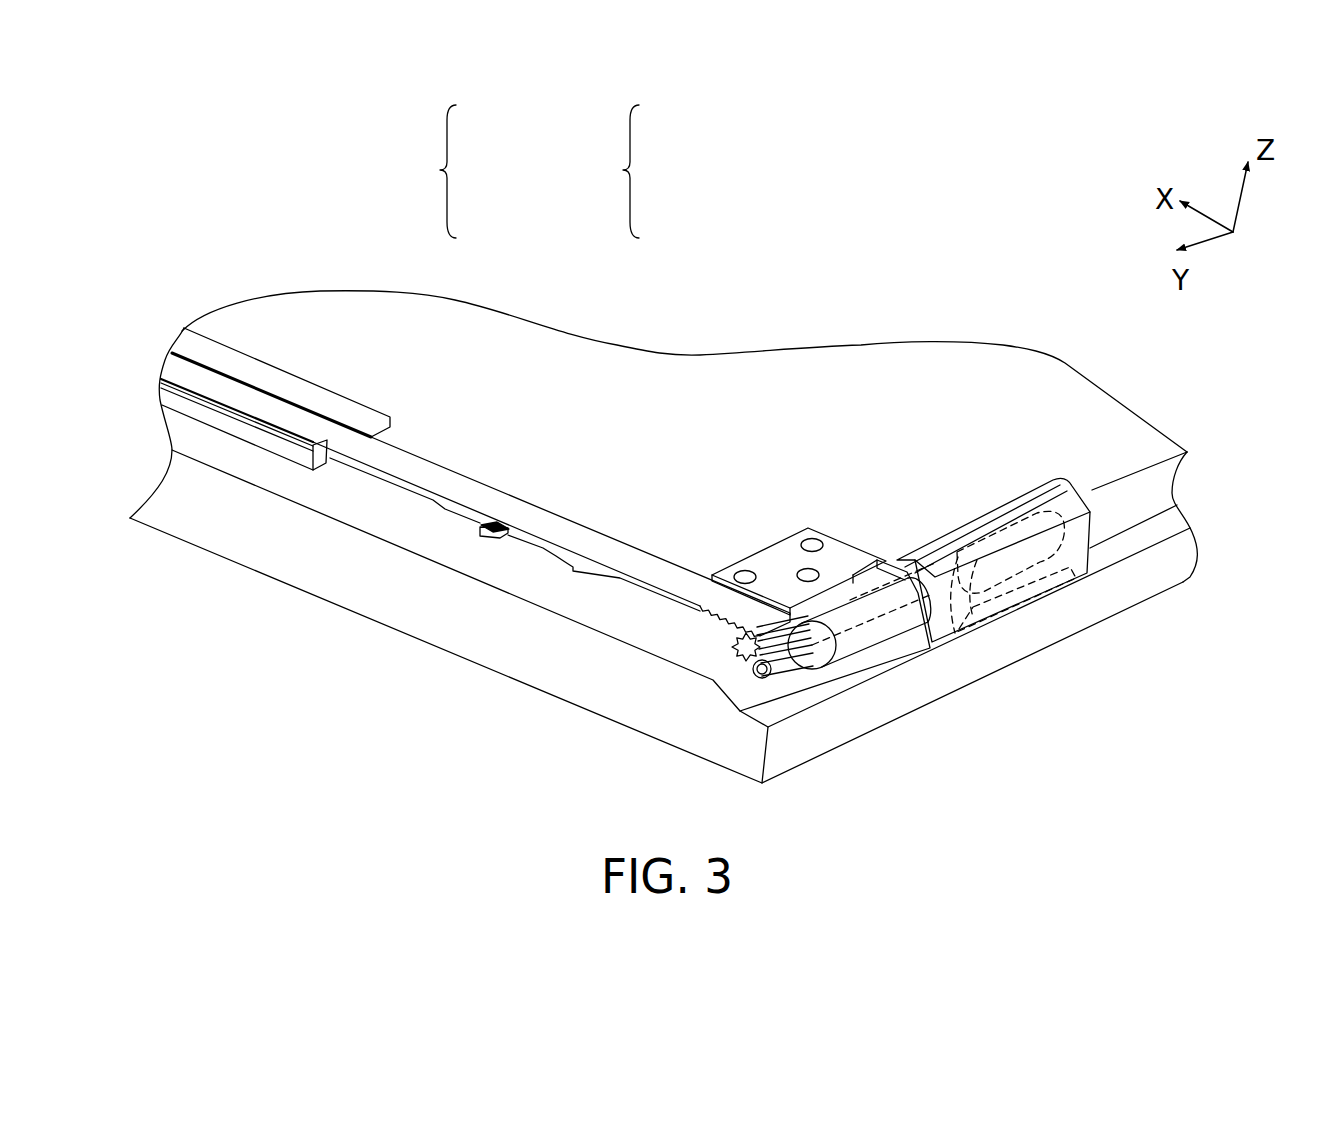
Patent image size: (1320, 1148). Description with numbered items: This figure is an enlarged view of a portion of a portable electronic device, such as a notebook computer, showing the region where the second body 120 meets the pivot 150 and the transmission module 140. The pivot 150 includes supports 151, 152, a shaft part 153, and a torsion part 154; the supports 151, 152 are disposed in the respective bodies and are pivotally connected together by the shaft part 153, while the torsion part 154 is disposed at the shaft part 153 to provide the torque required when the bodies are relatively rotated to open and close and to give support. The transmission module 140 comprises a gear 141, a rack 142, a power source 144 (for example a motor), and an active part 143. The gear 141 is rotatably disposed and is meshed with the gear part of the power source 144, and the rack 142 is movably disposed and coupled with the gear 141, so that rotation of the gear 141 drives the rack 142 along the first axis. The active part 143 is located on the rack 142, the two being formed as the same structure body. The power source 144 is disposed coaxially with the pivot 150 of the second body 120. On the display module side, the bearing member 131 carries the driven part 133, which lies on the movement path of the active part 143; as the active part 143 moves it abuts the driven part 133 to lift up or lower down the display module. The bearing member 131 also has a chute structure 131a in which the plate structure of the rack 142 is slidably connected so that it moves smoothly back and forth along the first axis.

The second body 120 is at (238, 542).
The bearing member 131 is at (298, 457).
The chute structure 131a is at (328, 447).
The driven part 133 is at (500, 545).
The transmission module 140 is at (452, 172).
The gear 141 is at (742, 633).
The rack 142 is at (700, 615).
The active part 143 is at (493, 517).
The power source 144 is at (847, 650).
The pivot 150 is at (632, 172).
The support 151 is at (1020, 587).
The support 152 is at (775, 553).
The shaft part 153 is at (893, 630).
The torsion part 154 is at (1000, 548).